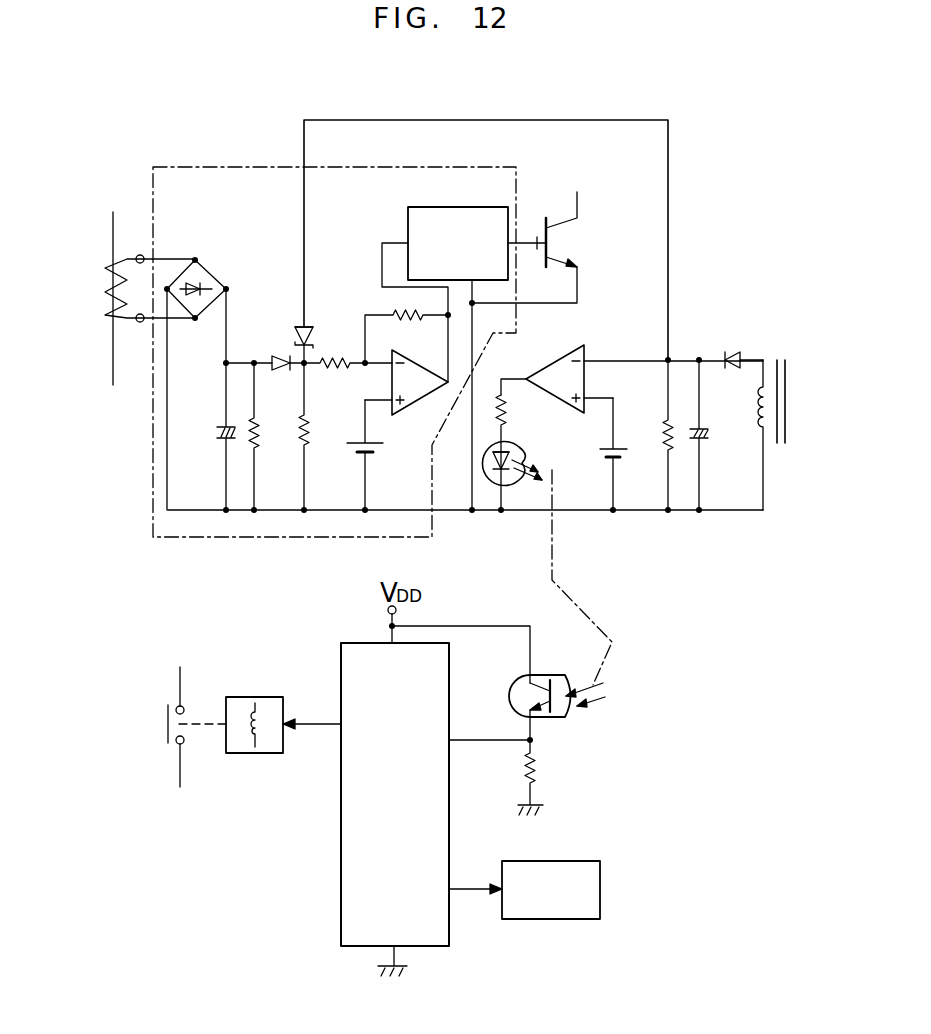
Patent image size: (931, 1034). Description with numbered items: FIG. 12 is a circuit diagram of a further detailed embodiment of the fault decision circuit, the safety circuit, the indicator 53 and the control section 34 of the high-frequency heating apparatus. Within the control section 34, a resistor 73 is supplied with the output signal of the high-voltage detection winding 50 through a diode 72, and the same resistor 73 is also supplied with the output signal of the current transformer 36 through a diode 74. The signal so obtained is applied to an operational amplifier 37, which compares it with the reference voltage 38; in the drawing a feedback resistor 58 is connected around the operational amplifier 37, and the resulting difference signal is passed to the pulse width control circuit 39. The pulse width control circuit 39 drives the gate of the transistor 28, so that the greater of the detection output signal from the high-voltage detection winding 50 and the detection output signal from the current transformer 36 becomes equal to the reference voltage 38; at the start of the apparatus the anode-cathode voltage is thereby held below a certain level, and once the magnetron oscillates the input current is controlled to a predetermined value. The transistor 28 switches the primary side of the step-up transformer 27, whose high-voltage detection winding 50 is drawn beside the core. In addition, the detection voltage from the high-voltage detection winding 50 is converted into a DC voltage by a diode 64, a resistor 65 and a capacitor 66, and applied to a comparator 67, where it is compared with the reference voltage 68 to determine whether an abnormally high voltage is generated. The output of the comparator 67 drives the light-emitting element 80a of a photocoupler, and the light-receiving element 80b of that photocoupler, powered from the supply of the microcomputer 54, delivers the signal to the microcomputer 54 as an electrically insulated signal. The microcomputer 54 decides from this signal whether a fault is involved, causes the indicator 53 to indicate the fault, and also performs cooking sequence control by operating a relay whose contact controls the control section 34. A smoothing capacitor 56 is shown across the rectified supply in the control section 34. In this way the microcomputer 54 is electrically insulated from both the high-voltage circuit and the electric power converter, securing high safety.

The step-up transformer 27 is at (788, 370).
The transistor 28 is at (578, 237).
The control section 34 is at (233, 540).
The current transformer 36 is at (106, 300).
The operational amplifier 37 is at (422, 366).
The reference signal generator 38 is at (383, 447).
The pulse width control circuit 39 is at (455, 207).
The high-voltage detection winding 50 is at (756, 407).
The indicator 53 is at (600, 890).
The microcomputer 54 is at (341, 842).
The smoothing capacitor 56 is at (218, 428).
The feedback resistor 58 is at (394, 312).
The diode 64 is at (740, 348).
The resistor 65 is at (662, 428).
The capacitor 66 is at (710, 437).
The comparator 67 is at (551, 365).
The reference voltage 68 is at (627, 455).
The diode 72 is at (295, 334).
The resistor 73 is at (310, 424).
The diode 74 is at (278, 358).
The photocoupler 80a is at (530, 450).
The photocoupler 80b is at (576, 712).